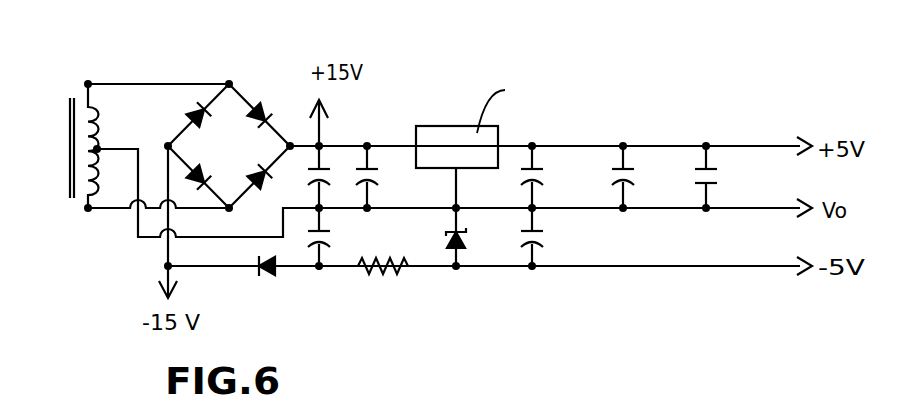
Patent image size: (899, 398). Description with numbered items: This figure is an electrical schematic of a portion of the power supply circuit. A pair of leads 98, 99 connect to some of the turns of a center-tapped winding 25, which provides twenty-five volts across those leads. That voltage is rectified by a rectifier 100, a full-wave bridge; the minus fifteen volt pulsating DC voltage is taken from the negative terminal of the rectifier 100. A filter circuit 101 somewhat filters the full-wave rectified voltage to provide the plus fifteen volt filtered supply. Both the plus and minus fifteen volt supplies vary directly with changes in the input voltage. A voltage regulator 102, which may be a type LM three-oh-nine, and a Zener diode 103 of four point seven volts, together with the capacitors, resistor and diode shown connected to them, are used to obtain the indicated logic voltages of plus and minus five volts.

The center-tapped winding 25 is at (62, 197).
The lead 98 is at (122, 212).
The lead 99 is at (155, 82).
The rectifier 100 is at (256, 153).
The filter circuit 101 is at (427, 197).
The voltage regulator 102 is at (469, 134).
The Zener diode 103 is at (468, 238).